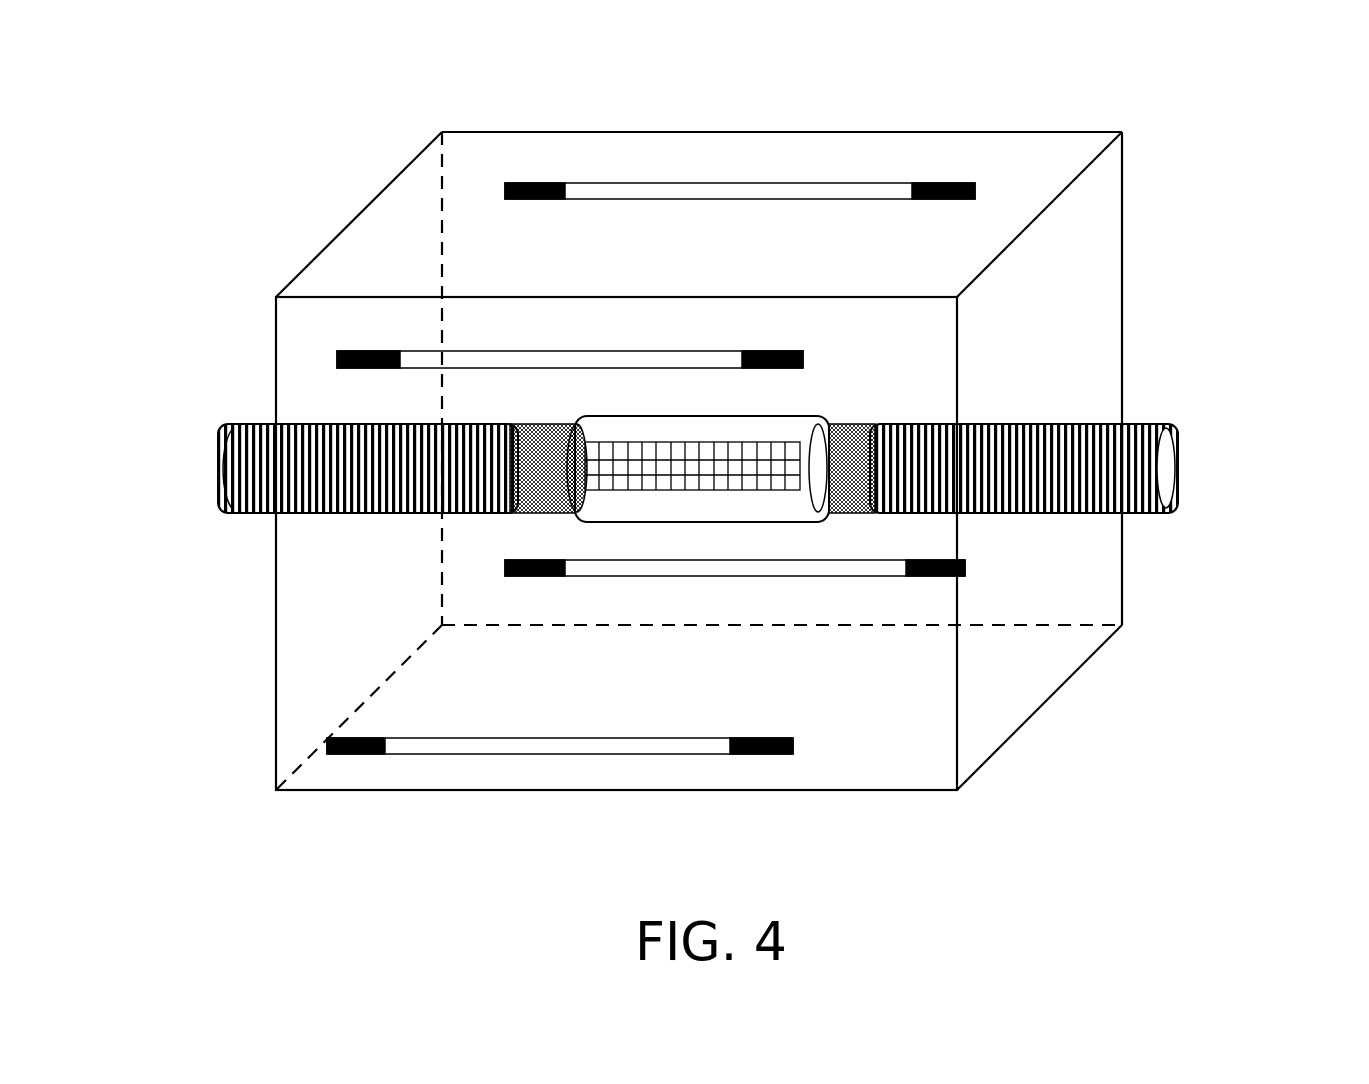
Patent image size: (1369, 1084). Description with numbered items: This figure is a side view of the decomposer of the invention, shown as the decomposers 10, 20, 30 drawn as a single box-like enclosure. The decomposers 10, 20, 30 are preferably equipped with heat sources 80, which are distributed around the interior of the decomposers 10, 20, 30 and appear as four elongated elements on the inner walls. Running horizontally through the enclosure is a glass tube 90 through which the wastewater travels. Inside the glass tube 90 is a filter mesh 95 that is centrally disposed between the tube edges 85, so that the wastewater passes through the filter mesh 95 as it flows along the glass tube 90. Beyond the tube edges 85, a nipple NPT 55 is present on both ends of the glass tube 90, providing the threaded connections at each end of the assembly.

The decomposer 10 is at (745, 416).
The decomposer 20 is at (745, 416).
The decomposer 30 is at (1097, 88).
The nipple NPT 55 is at (245, 450).
The heat source 80 is at (705, 190).
The tube edge 85 is at (533, 458).
The glass tube 90 is at (717, 505).
The filter mesh 95 is at (765, 478).